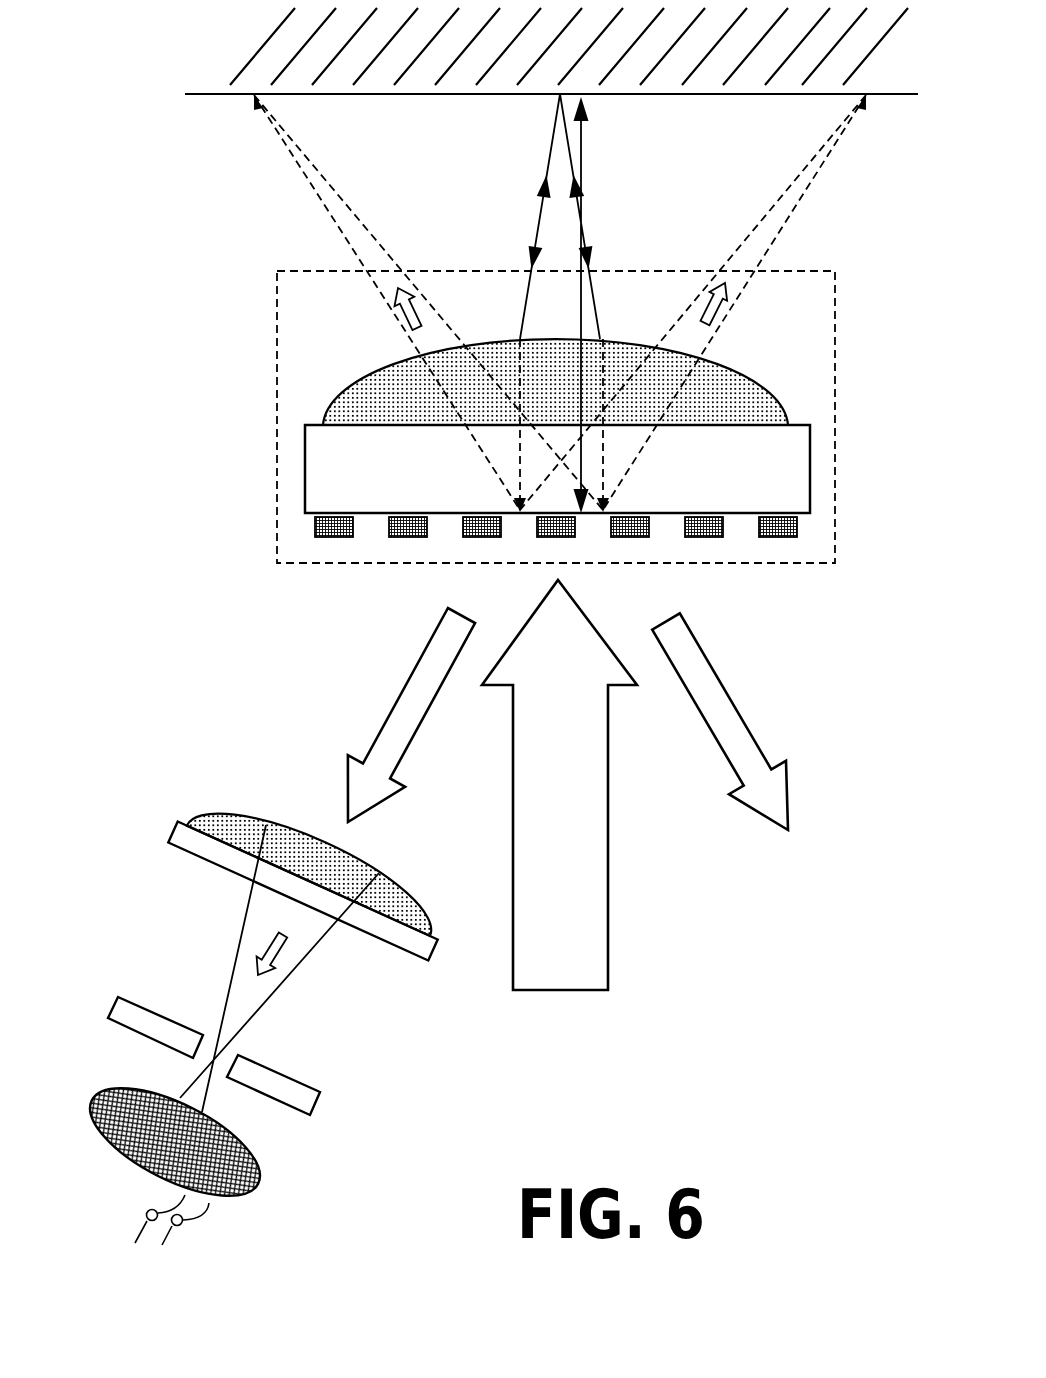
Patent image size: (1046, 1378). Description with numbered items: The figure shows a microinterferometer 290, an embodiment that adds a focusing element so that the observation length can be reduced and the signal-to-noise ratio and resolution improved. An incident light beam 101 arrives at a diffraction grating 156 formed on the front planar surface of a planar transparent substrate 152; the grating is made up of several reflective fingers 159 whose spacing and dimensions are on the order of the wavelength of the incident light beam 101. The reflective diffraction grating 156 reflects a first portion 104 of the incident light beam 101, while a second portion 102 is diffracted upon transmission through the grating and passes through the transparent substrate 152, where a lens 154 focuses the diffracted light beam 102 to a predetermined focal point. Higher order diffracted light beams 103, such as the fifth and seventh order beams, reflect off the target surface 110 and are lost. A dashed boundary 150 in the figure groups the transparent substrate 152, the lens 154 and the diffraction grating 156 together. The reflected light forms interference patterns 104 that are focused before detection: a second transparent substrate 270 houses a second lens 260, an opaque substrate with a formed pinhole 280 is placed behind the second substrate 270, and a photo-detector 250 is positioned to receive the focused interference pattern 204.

The target surface 110 is at (236, 39).
The diffracted light beam 102 is at (583, 205).
The higher order diffracted light beams 103 is at (813, 162).
The LED light source module 150 is at (843, 359).
The transparent substrate 152 is at (764, 499).
The lens 154 is at (354, 378).
The diffraction grating 156 is at (676, 556).
The diffraction grating fingers 159 is at (316, 522).
The incident light beam 101 is at (609, 897).
The first portion of the incident light beam 104 is at (390, 718).
The microinterferometer 290 is at (863, 734).
The focused interference pattern 204 is at (229, 933).
The second lens 260 is at (430, 912).
The second transparent substrate 270 is at (438, 942).
The pinhole 280 is at (320, 1098).
The photo-detector 250 is at (97, 1128).